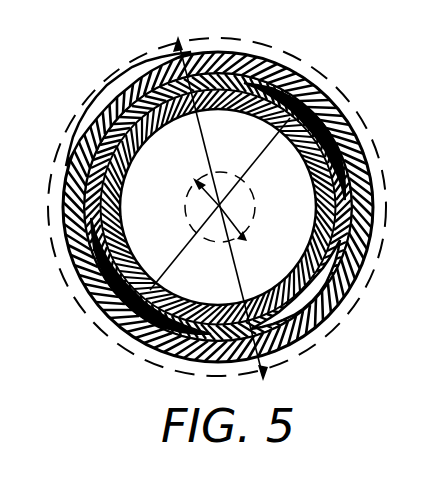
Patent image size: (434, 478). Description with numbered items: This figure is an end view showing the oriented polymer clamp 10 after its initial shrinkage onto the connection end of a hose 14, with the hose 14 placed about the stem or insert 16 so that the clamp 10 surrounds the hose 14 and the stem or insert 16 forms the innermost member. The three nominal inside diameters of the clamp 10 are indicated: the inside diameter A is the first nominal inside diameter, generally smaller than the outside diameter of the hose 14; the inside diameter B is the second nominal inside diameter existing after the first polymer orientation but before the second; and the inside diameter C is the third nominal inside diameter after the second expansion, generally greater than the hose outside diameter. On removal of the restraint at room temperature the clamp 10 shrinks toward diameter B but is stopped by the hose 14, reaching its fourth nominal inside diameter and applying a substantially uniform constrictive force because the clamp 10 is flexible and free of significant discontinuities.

The clamp 10 is at (257, 53).
The hose 14 is at (340, 158).
The stem or insert 16 is at (252, 103).
The inside diameter A is at (255, 217).
The inside diameter B is at (183, 244).
The inside diameter C is at (200, 149).